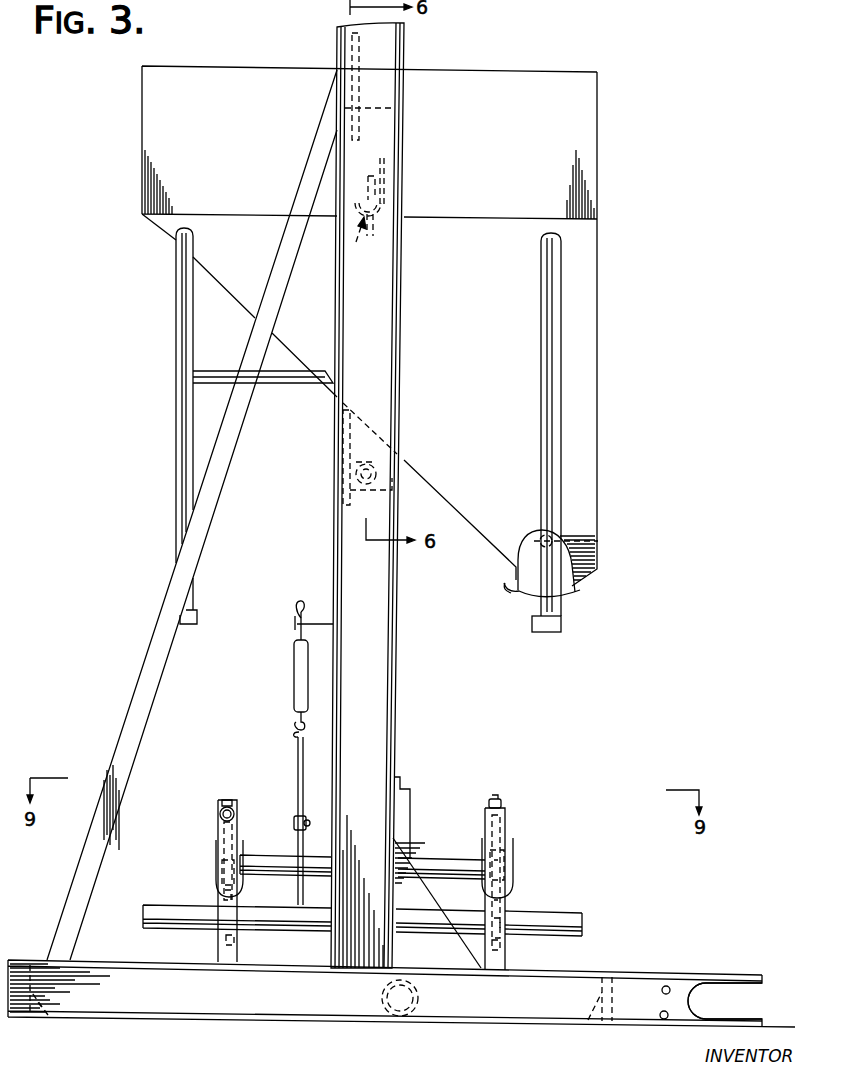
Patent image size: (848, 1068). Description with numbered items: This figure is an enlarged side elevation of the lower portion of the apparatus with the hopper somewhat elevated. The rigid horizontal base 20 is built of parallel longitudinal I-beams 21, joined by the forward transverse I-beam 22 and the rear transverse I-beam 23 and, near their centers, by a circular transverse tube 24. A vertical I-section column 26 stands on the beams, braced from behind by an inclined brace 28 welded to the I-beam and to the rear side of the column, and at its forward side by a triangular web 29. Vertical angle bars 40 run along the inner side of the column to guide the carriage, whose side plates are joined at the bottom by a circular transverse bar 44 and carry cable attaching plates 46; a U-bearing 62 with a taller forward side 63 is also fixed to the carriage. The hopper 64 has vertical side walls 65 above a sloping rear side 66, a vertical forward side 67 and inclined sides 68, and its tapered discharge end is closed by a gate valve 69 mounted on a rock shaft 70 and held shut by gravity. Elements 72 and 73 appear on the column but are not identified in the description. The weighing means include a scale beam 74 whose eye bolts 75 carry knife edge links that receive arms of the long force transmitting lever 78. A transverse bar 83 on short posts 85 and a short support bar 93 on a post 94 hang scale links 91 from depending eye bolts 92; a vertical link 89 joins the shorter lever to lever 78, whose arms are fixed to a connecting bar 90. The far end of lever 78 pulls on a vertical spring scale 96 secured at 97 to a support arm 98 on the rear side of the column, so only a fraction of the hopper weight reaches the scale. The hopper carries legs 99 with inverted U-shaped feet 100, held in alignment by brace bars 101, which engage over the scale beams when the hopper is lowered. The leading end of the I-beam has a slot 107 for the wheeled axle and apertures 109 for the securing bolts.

The rigid horizontal base 20 is at (401, 1007).
The longitudinal I-beams 21 is at (420, 1027).
The forward transverse I-beam 22 is at (590, 1016).
The rear transverse I-beam 23 is at (60, 1009).
The horizontal transverse tube 24 is at (392, 1017).
The vertical columns 26 is at (389, 497).
The inclined braces 28 is at (187, 515).
The triangular webs 29 is at (437, 872).
The vertical angle bars 40 is at (371, 495).
The horizontal transverse bar 44 is at (346, 476).
The cable attaching plates 46 is at (346, 86).
The U-bearings 62 is at (364, 246).
The forward sides of U-bearings 63 is at (414, 171).
The hopper 64 is at (394, 326).
The vertical side walls 65 is at (348, 140).
The rear side of hopper 66 is at (354, 418).
The forward side of hopper 67 is at (618, 320).
The inclined hopper sides 68 is at (500, 296).
The pivoted gate valve 69 is at (559, 579).
The horizontal rock shaft 70 is at (589, 553).
The bolt 72 is at (458, 553).
The slot 73 is at (327, 457).
The scale beams 74 is at (365, 906).
The vertical eye bolts 75 is at (361, 914).
The force transmitting lever 78 is at (279, 821).
The transverse horizontal bar 83 is at (206, 809).
The upright posts 85 is at (214, 881).
The vertical link 89 is at (282, 829).
The horizontal connecting bar 90 is at (362, 853).
The scale links 91 is at (366, 868).
The depending eye bolts 92 is at (202, 860).
The short horizontal support bar 93 is at (519, 809).
The vertical post 94 is at (518, 889).
The vertical spring scale 96 is at (282, 688).
The upper end securement of spring scale 97 is at (278, 633).
The short support arm 98 is at (314, 602).
The depending vertical legs 99 is at (352, 422).
The inverted U-shaped foot 100 is at (375, 640).
The horizontal brace bars 101 is at (263, 392).
The slots 107 is at (728, 981).
The apertures 109 is at (685, 979).